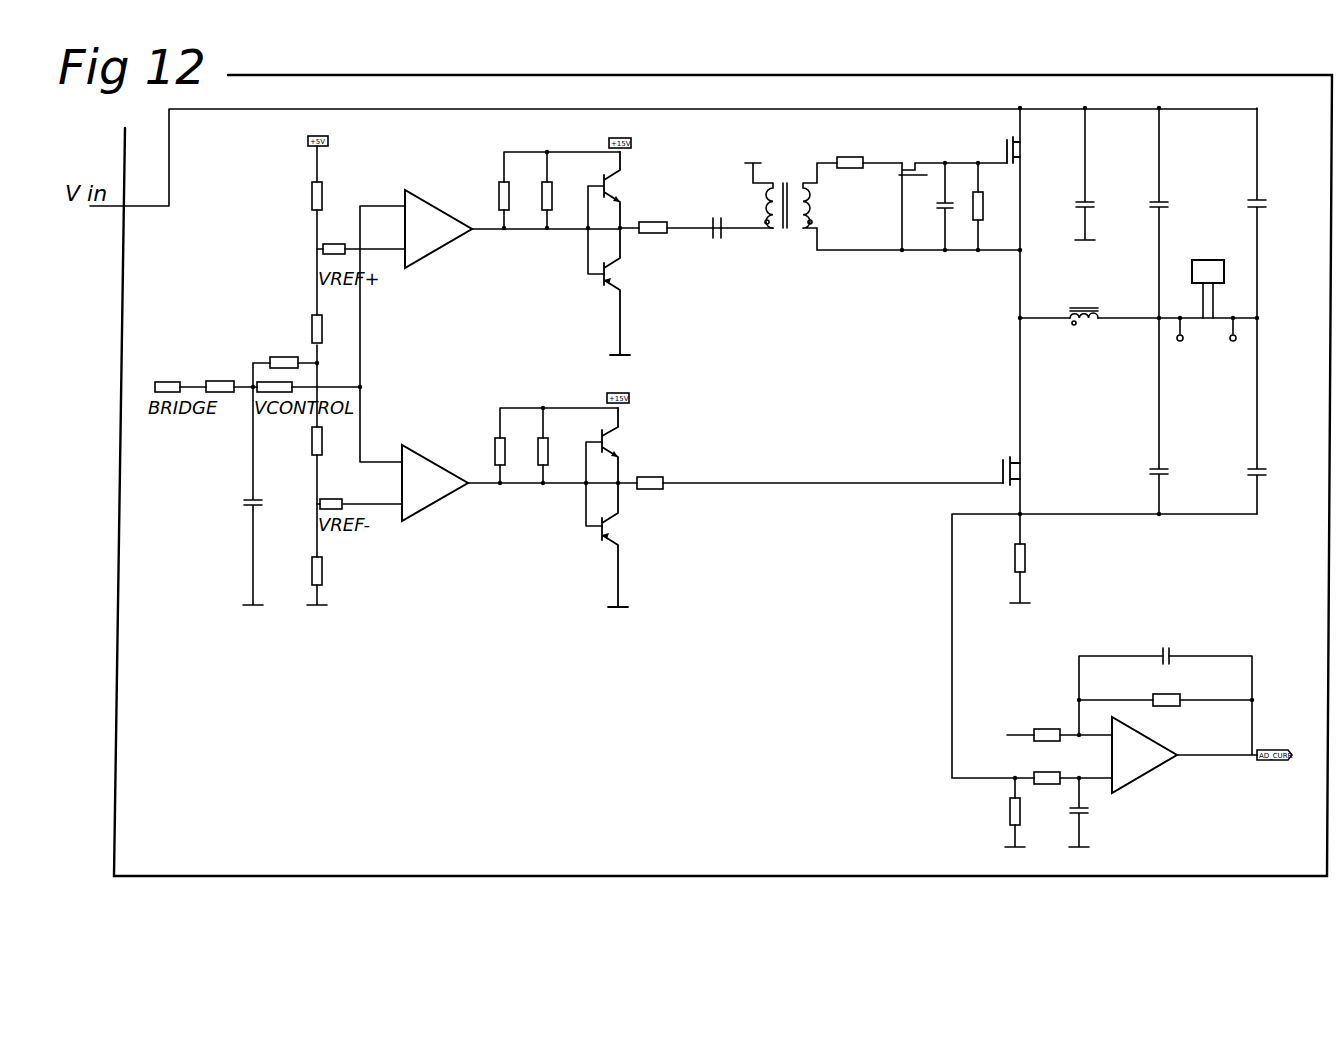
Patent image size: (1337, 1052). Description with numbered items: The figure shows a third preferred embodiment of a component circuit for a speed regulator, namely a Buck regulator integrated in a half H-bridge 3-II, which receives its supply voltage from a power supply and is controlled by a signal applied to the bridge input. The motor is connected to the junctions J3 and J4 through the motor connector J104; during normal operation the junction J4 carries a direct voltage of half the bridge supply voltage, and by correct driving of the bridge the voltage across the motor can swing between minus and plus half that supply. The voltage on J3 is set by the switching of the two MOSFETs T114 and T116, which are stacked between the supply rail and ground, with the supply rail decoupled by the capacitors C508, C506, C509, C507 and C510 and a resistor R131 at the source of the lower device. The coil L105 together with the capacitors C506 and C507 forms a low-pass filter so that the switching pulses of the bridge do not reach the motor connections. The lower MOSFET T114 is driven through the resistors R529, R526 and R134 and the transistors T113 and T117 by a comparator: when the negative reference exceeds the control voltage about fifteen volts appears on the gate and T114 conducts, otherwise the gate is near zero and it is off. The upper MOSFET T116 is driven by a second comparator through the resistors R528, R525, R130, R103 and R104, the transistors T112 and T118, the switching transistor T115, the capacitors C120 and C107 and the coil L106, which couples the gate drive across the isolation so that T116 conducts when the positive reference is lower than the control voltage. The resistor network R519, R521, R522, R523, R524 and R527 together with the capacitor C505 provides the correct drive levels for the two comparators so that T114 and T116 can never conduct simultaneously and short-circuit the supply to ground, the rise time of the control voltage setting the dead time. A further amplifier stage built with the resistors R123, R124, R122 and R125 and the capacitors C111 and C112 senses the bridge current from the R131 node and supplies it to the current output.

The half H-bridge circuit 3-II is at (711, 475).
The resistor R519 is at (331, 196).
The resistor R521 is at (331, 329).
The resistor R522 is at (331, 441).
The resistor R523 is at (331, 571).
The resistor R524 is at (217, 376).
The resistor R527 is at (281, 352).
The capacitor C505 is at (238, 496).
The resistor R528 is at (518, 196).
The resistor R525 is at (561, 196).
The transistor T112 is at (632, 190).
The transistor T118 is at (632, 291).
The resistor R130 is at (655, 218).
The capacitor C120 is at (721, 221).
The coil L106 is at (882, 214).
The resistor R103 is at (853, 147).
The transistor T115 is at (950, 188).
The capacitor C107 is at (933, 206).
The resistor R104 is at (995, 206).
The MOSFET T116 is at (1033, 150).
The capacitor C508 is at (1095, 174).
The capacitor C506 is at (1171, 213).
The capacitor C509 is at (1272, 213).
The coil L105 is at (1080, 303).
The motor connector J104 is at (1208, 279).
The junction J3 is at (1171, 334).
The junction J4 is at (1223, 334).
The MOSFET T114 is at (1030, 471).
The capacitor C507 is at (1170, 416).
The capacitor C510 is at (1270, 416).
The resistor R131 is at (1033, 558).
The resistor R123 is at (1051, 724).
The resistor R124 is at (1051, 768).
The resistor R122 is at (1031, 812).
The capacitor C111 is at (1093, 812).
The capacitor C112 is at (1172, 646).
The resistor R125 is at (1170, 690).
The resistor R529 is at (514, 451).
The resistor R526 is at (557, 451).
The transistor T113 is at (630, 445).
The transistor T117 is at (630, 545).
The resistor R134 is at (653, 474).